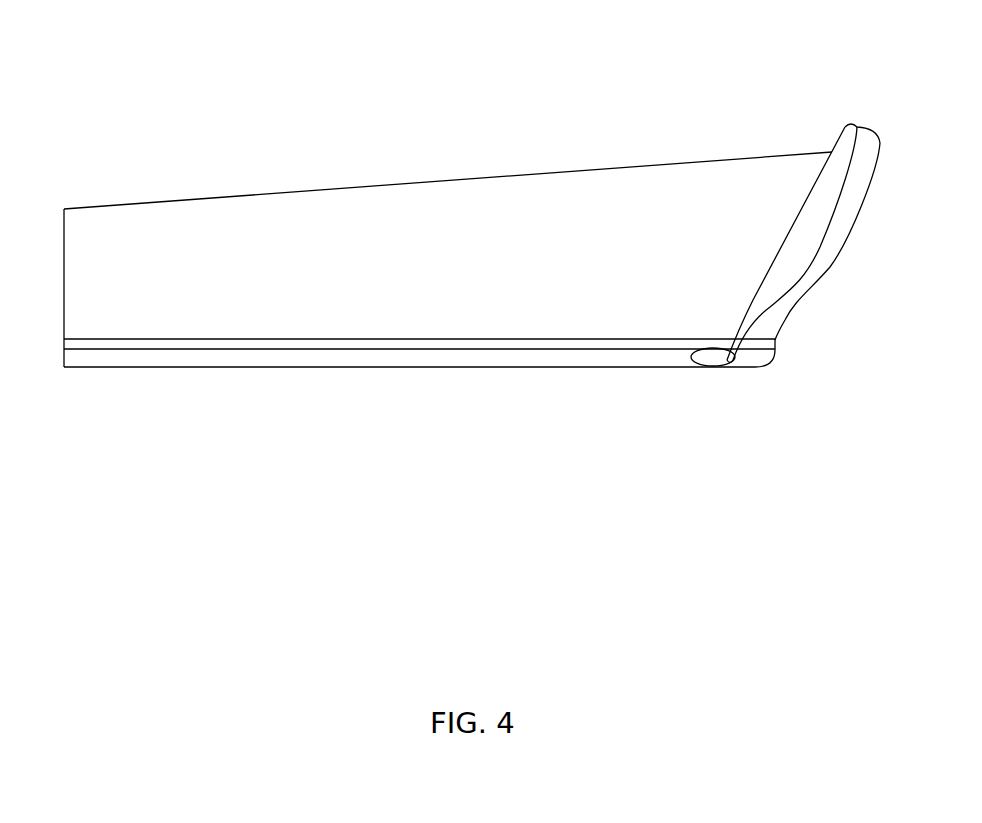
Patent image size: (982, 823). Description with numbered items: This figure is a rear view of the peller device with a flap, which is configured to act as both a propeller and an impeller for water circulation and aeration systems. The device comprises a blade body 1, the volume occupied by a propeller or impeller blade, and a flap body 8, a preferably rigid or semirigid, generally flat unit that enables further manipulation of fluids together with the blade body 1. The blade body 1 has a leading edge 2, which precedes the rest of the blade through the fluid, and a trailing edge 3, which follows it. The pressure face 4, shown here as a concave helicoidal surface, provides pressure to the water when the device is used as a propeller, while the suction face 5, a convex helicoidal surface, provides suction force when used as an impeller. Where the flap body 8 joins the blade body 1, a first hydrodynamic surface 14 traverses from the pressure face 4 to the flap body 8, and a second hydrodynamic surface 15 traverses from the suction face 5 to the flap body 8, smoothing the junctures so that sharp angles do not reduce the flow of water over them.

The blade body 1 is at (113, 50).
The leading edge 2 is at (377, 188).
The trailing edge 3 is at (358, 338).
The pressure face 4 is at (596, 272).
The suction face 5 is at (863, 173).
The flap body 8 is at (502, 360).
The first hydrodynamic surface 14 is at (667, 345).
The second hydrodynamic surface 15 is at (768, 349).